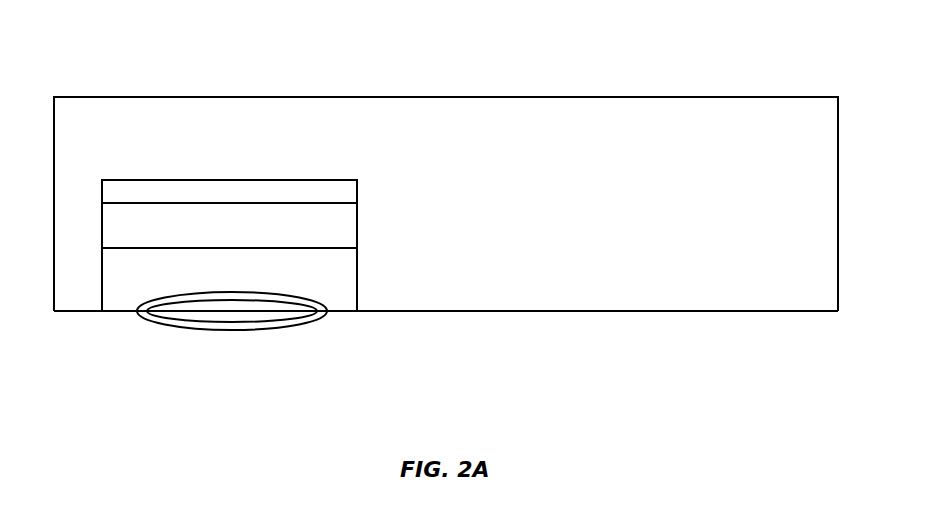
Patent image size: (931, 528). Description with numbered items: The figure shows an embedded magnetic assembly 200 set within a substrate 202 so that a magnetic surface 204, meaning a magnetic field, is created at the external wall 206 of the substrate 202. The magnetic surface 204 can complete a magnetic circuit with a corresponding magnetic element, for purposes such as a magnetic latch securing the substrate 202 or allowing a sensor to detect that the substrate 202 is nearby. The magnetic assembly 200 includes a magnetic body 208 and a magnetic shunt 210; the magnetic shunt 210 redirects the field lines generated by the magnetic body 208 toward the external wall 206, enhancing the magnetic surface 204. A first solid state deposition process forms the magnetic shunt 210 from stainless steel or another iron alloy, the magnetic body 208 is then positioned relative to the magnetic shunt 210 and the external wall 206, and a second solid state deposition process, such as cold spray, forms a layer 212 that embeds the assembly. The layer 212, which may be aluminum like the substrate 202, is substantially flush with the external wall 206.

The embedded magnetic assembly 200 is at (446, 214).
The substrate 202 is at (741, 143).
The magnetic surface 204 is at (352, 335).
The external wall 206 is at (648, 313).
The magnetic body 208 is at (360, 224).
The magnetic shunt 210 is at (360, 191).
The layer 212 is at (360, 273).